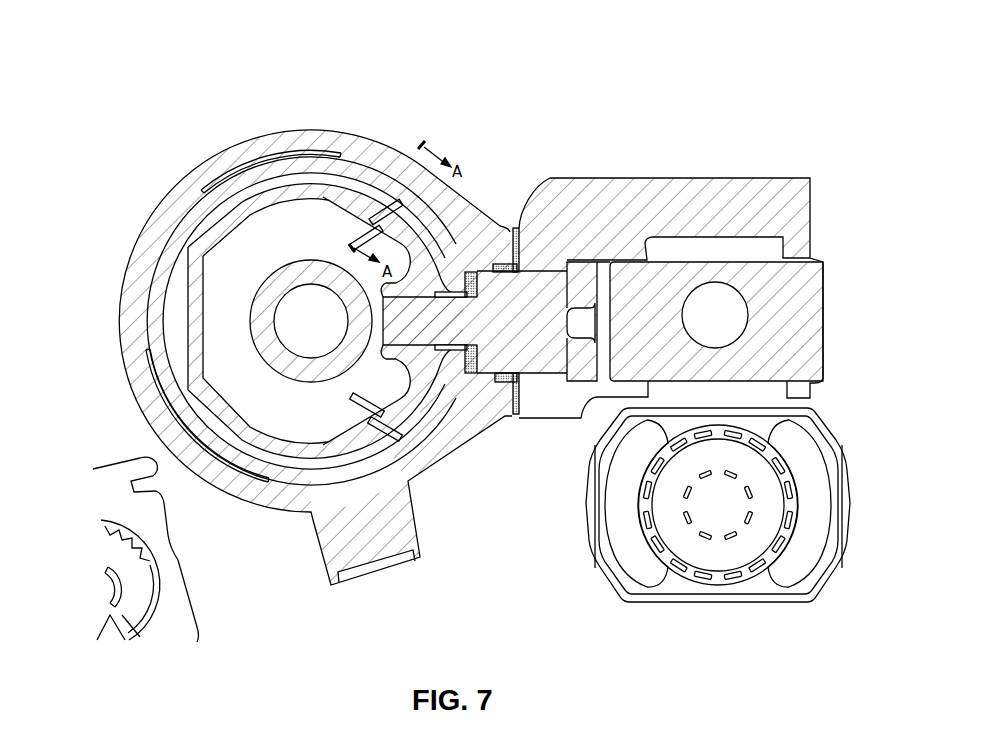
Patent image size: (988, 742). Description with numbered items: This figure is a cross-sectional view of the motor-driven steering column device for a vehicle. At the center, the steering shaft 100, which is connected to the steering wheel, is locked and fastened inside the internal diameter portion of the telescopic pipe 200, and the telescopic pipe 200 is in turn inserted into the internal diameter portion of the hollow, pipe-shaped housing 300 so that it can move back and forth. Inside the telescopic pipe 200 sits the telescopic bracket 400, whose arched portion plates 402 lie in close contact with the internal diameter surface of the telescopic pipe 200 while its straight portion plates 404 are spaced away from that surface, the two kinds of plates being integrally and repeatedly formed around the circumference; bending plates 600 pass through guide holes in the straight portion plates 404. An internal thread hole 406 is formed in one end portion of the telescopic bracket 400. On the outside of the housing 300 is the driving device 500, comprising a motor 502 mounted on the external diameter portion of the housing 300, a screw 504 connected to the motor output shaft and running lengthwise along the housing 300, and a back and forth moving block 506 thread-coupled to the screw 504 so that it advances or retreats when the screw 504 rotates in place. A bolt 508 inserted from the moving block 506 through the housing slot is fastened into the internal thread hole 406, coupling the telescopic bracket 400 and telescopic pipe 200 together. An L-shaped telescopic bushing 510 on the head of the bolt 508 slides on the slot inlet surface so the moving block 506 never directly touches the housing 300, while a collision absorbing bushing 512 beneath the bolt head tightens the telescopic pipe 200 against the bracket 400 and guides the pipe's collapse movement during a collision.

The steering shaft 100 is at (285, 283).
The telescopic pipe 200 is at (290, 168).
The housing 300 is at (337, 133).
The telescopic bracket 400 is at (186, 292).
The arched portion plates 402 is at (180, 208).
The straight portion plates 404 is at (193, 350).
The internal thread hole 406 is at (431, 302).
The driving device 500 is at (687, 174).
The motor 502 is at (820, 432).
The screw 504 is at (723, 303).
The back and forth moving block 506 is at (572, 190).
The bolt 508 is at (540, 381).
The telescopic bushing 510 is at (521, 240).
The collision absorbing bushing 512 is at (467, 378).
The bending plates 600 is at (378, 202).